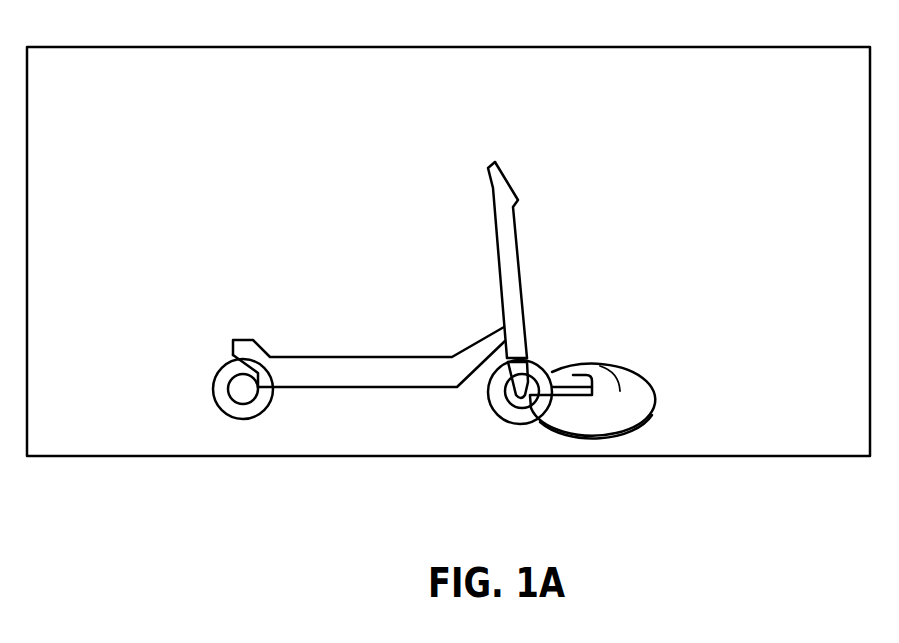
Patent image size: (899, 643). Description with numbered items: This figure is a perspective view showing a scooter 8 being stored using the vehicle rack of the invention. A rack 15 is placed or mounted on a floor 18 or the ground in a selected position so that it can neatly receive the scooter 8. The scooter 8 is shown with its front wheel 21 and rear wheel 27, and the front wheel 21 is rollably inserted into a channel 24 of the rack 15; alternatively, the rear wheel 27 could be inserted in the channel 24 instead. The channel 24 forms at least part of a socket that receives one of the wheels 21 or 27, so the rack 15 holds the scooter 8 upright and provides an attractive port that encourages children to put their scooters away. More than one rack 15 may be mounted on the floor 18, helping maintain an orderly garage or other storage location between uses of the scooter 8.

The scooter 8 is at (380, 370).
The rack 15 is at (603, 420).
The floor 18 is at (379, 447).
The front wheel 21 is at (503, 407).
The channel 24 is at (570, 376).
The rear wheel 27 is at (223, 382).